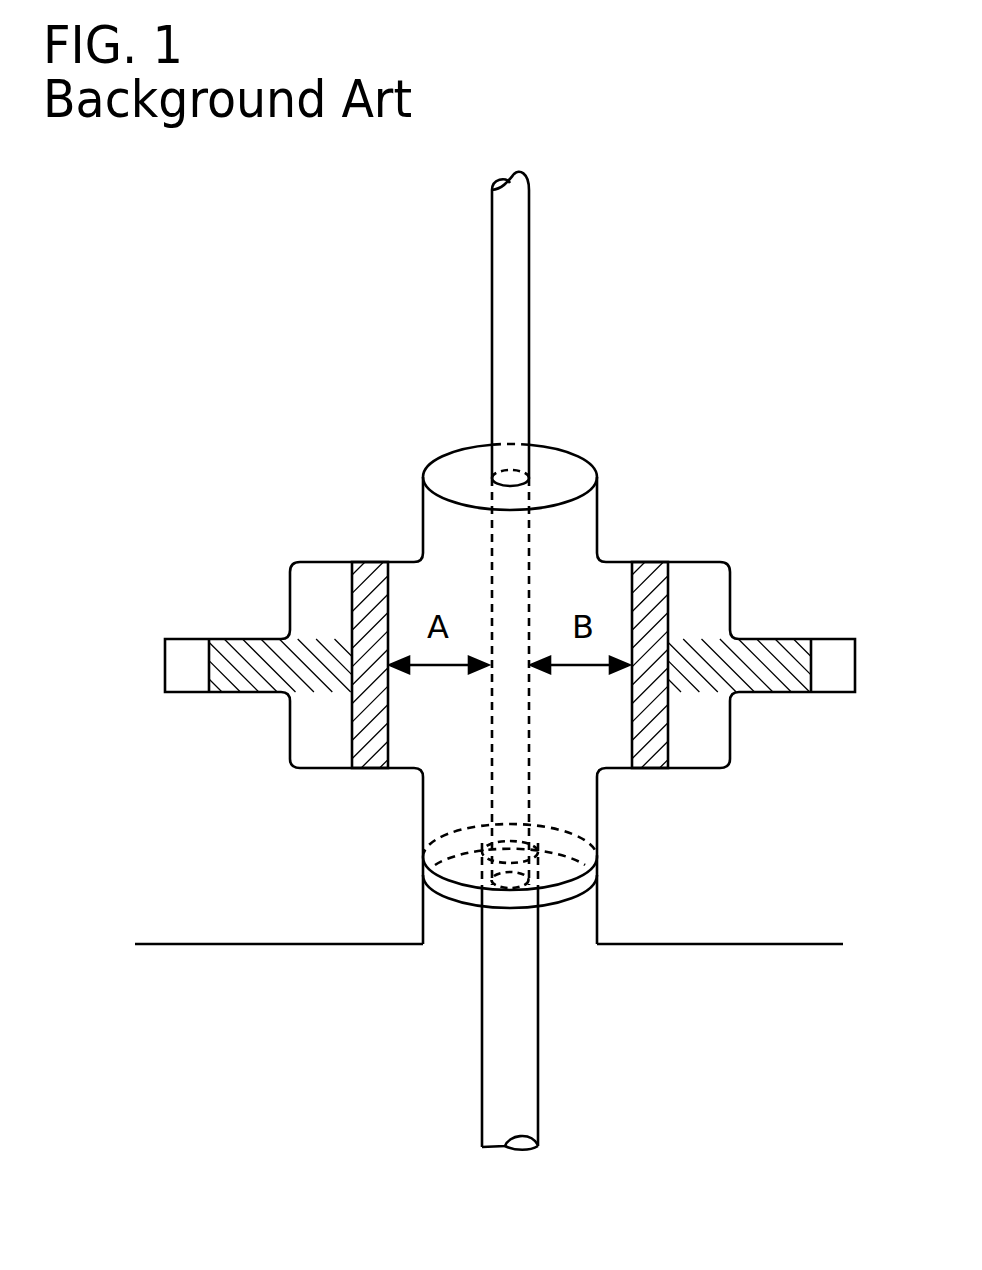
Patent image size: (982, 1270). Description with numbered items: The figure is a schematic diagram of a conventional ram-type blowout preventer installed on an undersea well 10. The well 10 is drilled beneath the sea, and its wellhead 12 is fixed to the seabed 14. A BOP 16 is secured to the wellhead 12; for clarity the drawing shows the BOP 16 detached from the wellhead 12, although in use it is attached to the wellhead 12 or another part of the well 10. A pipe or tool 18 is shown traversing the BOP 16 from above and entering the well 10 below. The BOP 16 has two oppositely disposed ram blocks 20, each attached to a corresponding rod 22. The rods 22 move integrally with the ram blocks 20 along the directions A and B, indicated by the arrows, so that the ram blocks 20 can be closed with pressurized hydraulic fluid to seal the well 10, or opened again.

The well 10 is at (540, 1078).
The wellhead 12 is at (598, 903).
The seabed 14 is at (748, 944).
The BOP 16 is at (597, 505).
The pipe 18 is at (530, 313).
The ram blocks 20 is at (348, 590).
The rods 22 is at (250, 679).